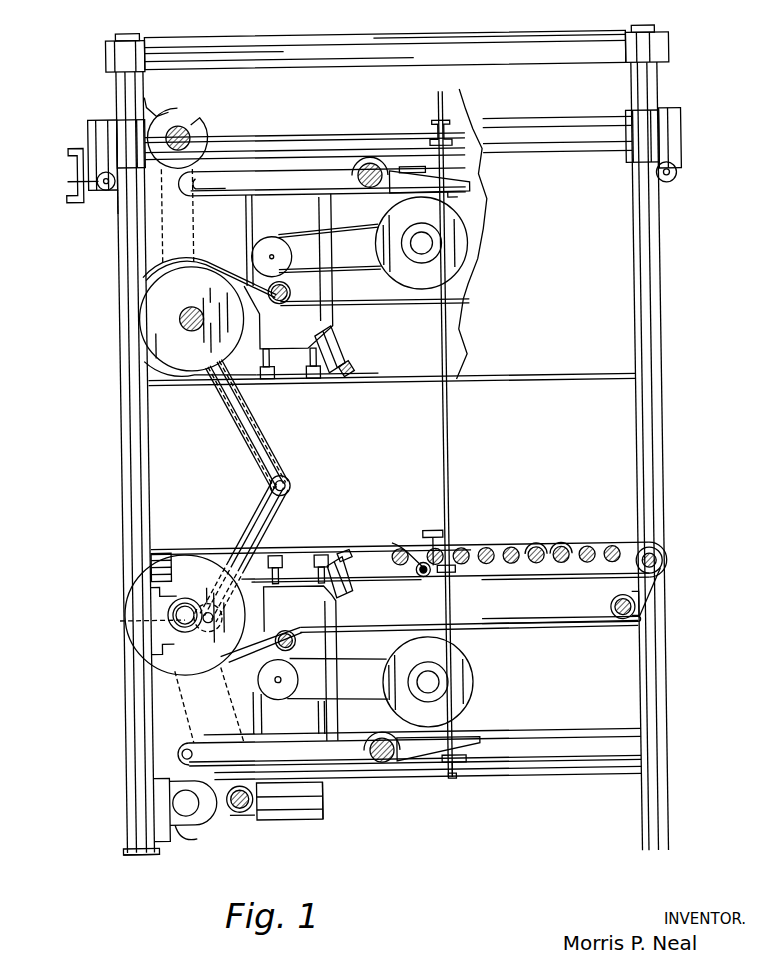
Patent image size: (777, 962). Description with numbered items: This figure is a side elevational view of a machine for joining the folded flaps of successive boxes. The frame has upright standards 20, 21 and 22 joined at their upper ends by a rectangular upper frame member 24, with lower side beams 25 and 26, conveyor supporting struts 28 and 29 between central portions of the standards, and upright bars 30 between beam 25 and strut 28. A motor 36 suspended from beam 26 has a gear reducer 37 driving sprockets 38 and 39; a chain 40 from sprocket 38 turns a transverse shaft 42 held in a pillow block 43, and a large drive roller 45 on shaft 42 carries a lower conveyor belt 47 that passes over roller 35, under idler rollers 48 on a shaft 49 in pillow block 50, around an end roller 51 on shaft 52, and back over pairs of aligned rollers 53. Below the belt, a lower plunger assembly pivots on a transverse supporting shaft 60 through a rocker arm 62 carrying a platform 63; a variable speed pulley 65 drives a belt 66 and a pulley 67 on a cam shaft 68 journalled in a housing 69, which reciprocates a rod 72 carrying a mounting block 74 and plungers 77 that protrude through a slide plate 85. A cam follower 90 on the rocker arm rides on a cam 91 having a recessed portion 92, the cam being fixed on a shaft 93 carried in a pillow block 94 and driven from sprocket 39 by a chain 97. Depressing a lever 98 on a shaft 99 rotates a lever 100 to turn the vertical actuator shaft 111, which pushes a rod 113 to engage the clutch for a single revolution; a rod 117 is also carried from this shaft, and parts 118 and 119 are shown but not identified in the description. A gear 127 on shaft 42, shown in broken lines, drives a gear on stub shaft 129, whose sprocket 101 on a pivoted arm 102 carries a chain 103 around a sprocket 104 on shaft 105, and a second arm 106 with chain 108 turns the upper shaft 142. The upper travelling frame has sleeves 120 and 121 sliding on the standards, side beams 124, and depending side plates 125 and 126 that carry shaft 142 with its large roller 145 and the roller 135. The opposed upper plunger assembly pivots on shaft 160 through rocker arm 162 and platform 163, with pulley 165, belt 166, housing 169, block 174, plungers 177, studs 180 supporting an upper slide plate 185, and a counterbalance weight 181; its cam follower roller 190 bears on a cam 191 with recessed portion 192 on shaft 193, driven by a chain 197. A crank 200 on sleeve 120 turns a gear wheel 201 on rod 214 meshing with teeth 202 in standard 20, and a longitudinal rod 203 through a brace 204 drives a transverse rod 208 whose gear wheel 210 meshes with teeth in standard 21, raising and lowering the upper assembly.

The standard 20 is at (121, 296).
The standard 21 is at (664, 258).
The standard 22 is at (665, 612).
The upper frame member 24 is at (330, 45).
The side beam 25 is at (532, 736).
The side beam 26 is at (480, 740).
The conveyor supporting strut 28 is at (160, 546).
The conveyor supporting strut 29 is at (528, 582).
The upright bars 30 is at (298, 569).
The roller 35 is at (287, 630).
The motor 36 is at (320, 812).
The gear reducer 37 is at (250, 820).
The sprocket 38 is at (289, 801).
The sprocket 39 is at (238, 813).
The continuous chain 40 is at (196, 725).
The transverse shaft 42 is at (181, 625).
The pillow block 43 is at (152, 600).
The drive roller 45 is at (217, 558).
The lower conveyor belt 47 is at (481, 549).
The idler roller 48 is at (613, 612).
The transverse shaft 49 is at (610, 606).
The pillow block 50 is at (629, 597).
The end roller 51 is at (660, 557).
The shaft 52 is at (662, 565).
The aligned rollers 53 is at (562, 548).
The transverse supporting shaft 60 is at (362, 748).
The rocker arm 62 is at (326, 778).
The platform 63 is at (314, 732).
The variable speed pulley 65 is at (466, 668).
The belt 66 is at (348, 660).
The pulley 67 is at (292, 686).
The cam shaft 68 is at (262, 713).
The plunger assembly housing 69 is at (330, 626).
The reciprocation rod 72 is at (322, 586).
The mounting block 74 is at (346, 582).
The plungers 77 is at (398, 568).
The slide plate 85 is at (298, 548).
The cam follower 90 is at (186, 739).
The cam 91 is at (158, 838).
The recessed portion 92 is at (176, 836).
The transverse shaft 93 is at (187, 803).
The pillow block 94 is at (152, 806).
The chain 97 is at (230, 810).
The lever 98 is at (394, 540).
The transverse shaft 99 is at (421, 578).
The upstanding lever 100 is at (437, 530).
The sprocket 101 is at (180, 596).
The pivoted arm 102 is at (258, 508).
The chain 103 is at (275, 525).
The sprocket 104 is at (290, 484).
The shaft 105 is at (288, 477).
The second arm 106 is at (252, 428).
The chain 108 is at (228, 408).
The actuator shaft 111 is at (449, 480).
The rod 113 is at (444, 780).
The rod 117 is at (384, 138).
The clamp 118 is at (460, 764).
The clamp 119 is at (440, 124).
The sleeve 120 is at (118, 118).
The sleeve 121 is at (656, 116).
The side beam 124 is at (552, 120).
The side plate 125 is at (468, 340).
The side plate 126 is at (515, 383).
The gear 127 is at (134, 628).
The stub shaft 129 is at (207, 622).
The roller 135 is at (294, 289).
The shaft 142 is at (186, 308).
The large roller 145 is at (150, 335).
The transverse supporting shaft 160 is at (362, 180).
The rocker arm 162 is at (257, 195).
The platform 163 is at (462, 198).
The variable speed pulley 165 is at (384, 220).
The belt 166 is at (322, 232).
The housing 169 is at (340, 300).
The block 174 is at (350, 358).
The plungers 177 is at (358, 370).
The studs 180 is at (272, 345).
The counterbalance weight 181 is at (449, 165).
The upper slide plate 185 is at (302, 383).
The cam follower roller 190 is at (260, 180).
The cam 191 is at (205, 115).
The recessed portion 192 is at (153, 96).
The shaft 193 is at (196, 133).
The chain 197 is at (209, 272).
The crank 200 is at (64, 171).
The gear wheel 201 is at (105, 187).
The teeth 202 is at (121, 205).
The longitudinal rod 203 is at (297, 140).
The brace 204 is at (686, 128).
The transverse rod 208 is at (682, 176).
The gear wheel 210 is at (677, 185).
The rod 214 is at (71, 181).